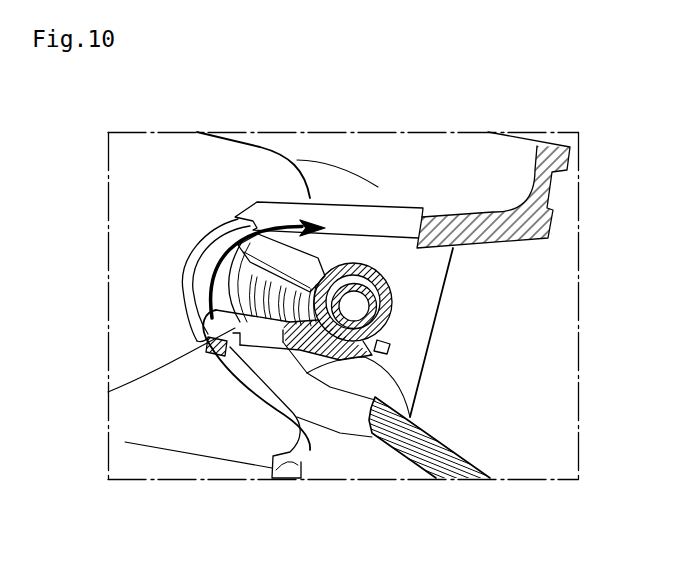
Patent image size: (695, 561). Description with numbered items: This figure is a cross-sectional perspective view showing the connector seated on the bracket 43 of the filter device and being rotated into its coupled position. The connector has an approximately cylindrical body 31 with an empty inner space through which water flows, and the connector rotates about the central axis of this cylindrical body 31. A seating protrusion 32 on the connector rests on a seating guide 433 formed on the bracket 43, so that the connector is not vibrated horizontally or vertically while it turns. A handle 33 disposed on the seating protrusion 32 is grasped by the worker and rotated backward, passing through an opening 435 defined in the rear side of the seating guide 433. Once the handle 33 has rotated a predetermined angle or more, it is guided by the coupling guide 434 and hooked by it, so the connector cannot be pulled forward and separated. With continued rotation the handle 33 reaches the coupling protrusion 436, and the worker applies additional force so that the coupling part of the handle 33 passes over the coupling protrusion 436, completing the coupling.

The bracket 43 is at (507, 157).
The opening 435 is at (402, 237).
The handle 33 is at (271, 252).
The coupling guide 434 is at (392, 288).
The coupling protrusion 436 is at (390, 308).
The seating guide 433 is at (207, 342).
The seating protrusion 32 is at (283, 342).
The cylindrical body 31 is at (410, 418).